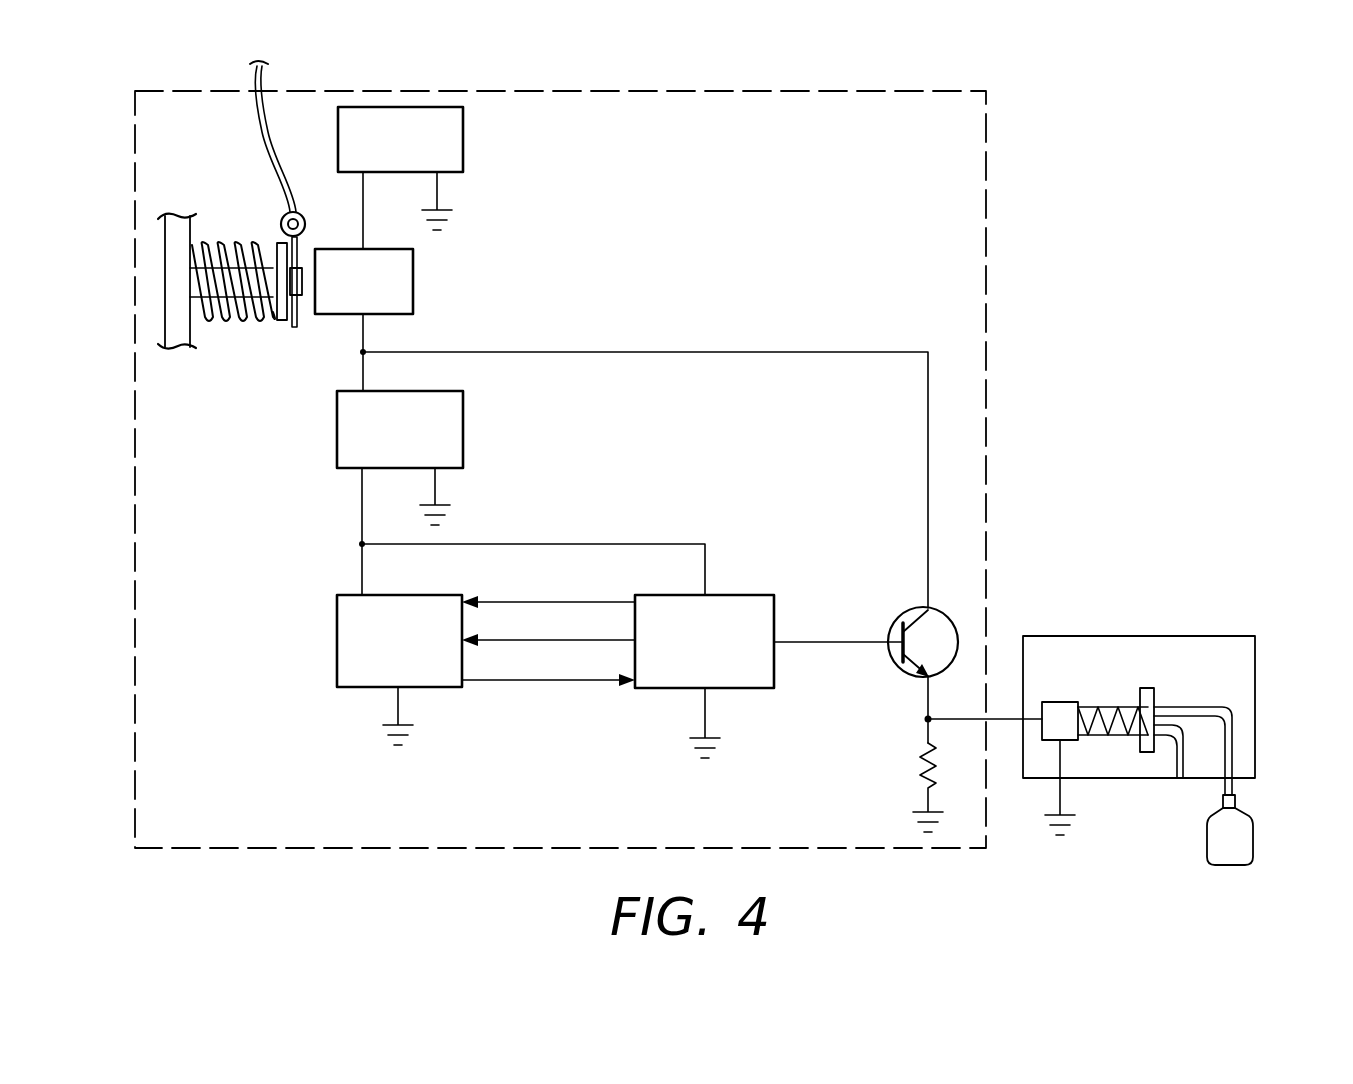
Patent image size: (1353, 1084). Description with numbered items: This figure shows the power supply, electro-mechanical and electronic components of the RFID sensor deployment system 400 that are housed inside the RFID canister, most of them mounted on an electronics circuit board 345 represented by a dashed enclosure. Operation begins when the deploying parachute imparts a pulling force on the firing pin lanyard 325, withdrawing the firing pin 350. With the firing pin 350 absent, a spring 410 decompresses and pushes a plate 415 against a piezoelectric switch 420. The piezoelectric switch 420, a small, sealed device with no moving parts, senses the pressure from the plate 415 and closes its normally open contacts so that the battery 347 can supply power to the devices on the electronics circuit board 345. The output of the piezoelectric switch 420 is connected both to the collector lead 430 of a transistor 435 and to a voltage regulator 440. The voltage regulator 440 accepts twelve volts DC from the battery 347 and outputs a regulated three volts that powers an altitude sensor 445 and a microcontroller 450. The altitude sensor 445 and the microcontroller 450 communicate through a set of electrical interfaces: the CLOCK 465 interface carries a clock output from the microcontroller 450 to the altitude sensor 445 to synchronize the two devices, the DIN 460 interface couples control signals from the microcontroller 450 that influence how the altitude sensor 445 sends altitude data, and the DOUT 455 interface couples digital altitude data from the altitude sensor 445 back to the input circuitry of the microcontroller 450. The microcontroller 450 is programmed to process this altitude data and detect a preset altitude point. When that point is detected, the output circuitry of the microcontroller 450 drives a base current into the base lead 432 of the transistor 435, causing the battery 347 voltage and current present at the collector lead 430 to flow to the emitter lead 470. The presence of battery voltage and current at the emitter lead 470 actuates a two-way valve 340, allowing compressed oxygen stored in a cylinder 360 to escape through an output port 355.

The RFID sensor deployment system 400 is at (1062, 105).
The electronics circuit board 345 is at (995, 190).
The firing pin lanyard 325 is at (262, 132).
The firing pin 350 is at (283, 228).
The spring 410 is at (217, 318).
The plate 415 is at (282, 322).
The battery 347 is at (453, 128).
The piezoelectric switch 420 is at (405, 268).
The voltage regulator 440 is at (453, 406).
The altitude sensor 445 is at (340, 623).
The microcontroller 450 is at (748, 610).
The DOUT interface 455 is at (486, 684).
The DIN interface 460 is at (549, 645).
The CLOCK interface 465 is at (594, 602).
The base lead 432 is at (797, 646).
The collector lead 430 is at (928, 512).
The transistor 435 is at (895, 625).
The emitter lead 470 is at (926, 698).
The two-way valve 340 is at (1124, 642).
The output port 355 is at (1180, 780).
The cylinder 360 is at (1210, 848).